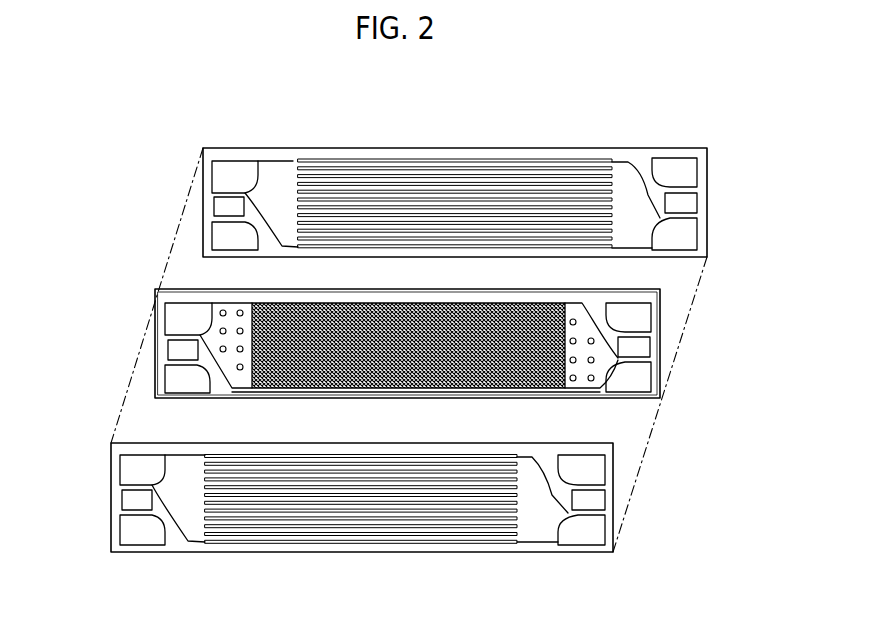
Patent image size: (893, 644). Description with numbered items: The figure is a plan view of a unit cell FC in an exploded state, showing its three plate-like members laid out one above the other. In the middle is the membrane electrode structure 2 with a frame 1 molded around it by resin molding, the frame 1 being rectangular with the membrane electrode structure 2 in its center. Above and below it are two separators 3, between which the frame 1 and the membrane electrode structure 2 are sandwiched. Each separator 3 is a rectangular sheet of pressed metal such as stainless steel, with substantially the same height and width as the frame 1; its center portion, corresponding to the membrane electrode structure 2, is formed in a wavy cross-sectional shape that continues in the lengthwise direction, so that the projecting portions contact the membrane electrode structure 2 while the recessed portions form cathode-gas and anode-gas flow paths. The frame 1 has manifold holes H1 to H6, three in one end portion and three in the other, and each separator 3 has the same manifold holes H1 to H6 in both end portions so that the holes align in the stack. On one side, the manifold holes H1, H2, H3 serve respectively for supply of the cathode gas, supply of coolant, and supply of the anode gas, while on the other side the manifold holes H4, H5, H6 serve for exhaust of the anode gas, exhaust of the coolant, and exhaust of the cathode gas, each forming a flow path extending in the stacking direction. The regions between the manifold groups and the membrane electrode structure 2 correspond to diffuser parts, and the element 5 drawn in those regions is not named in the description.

The unit cell FC is at (582, 128).
The frame 1 is at (250, 303).
The membrane electrode structure 2 is at (382, 335).
The separator 3 is at (415, 190).
The porous body 5 is at (254, 392).
The manifold hole H1 is at (243, 185).
The manifold hole H2 is at (225, 207).
The manifold hole H3 is at (235, 240).
The manifold hole H4 is at (675, 165).
The manifold hole H5 is at (683, 207).
The manifold hole H6 is at (683, 238).